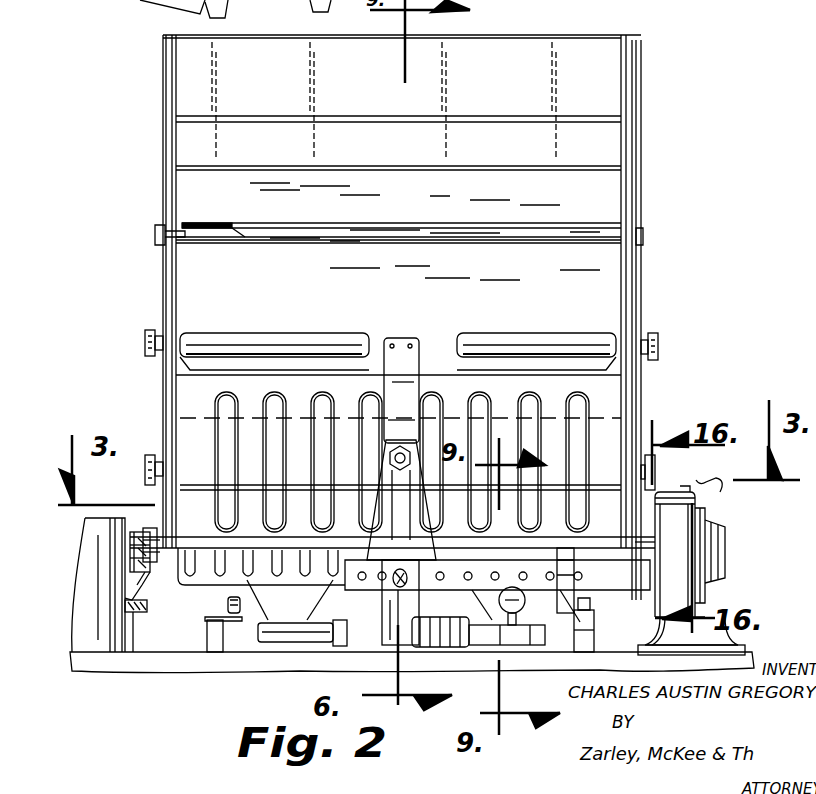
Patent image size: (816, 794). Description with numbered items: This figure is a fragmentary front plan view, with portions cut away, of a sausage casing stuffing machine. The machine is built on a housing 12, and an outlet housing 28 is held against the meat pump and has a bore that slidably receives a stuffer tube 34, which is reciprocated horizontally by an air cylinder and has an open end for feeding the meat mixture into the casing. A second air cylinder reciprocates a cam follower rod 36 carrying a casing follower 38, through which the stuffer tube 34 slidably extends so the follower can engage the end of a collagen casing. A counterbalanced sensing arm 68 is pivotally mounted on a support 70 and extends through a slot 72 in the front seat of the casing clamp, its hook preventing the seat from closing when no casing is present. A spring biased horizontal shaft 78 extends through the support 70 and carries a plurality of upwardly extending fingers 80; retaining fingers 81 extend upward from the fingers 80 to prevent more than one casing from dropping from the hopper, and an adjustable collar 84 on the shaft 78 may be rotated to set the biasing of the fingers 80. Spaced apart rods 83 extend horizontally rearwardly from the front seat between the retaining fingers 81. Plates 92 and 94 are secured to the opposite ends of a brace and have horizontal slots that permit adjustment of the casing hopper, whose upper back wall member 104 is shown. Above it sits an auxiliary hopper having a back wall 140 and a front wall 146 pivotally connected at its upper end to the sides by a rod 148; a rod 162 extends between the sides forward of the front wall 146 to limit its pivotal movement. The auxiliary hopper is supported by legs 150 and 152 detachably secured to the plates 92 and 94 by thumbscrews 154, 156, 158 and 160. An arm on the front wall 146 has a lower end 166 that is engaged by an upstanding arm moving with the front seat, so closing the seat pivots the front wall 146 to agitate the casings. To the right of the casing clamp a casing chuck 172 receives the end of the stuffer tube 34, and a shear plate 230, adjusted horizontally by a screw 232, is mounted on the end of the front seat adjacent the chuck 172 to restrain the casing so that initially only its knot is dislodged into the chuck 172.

The housing 12 is at (95, 0).
The outlet housing 28 is at (102, 626).
The stuffer tube 34 is at (168, 548).
The cam follower rod 36 is at (133, 652).
The casing follower 38 is at (148, 528).
The counterbalanced sensing arm 68 is at (393, 580).
The support 70 is at (398, 605).
The slot 72 is at (400, 572).
The spring biased horizontal shaft 78 is at (290, 644).
The fingers 80 is at (262, 615).
The retaining fingers 81 is at (240, 562).
The spaced apart rods 83 is at (523, 576).
The adjustable collar 84 is at (518, 615).
The plate 92 is at (641, 405).
The plate 94 is at (160, 383).
The upper back wall member 104 is at (412, 217).
The back wall 140 is at (580, 52).
The front wall 146 is at (410, 305).
The rod 148 is at (165, 264).
The leg 150 is at (637, 170).
The leg 152 is at (163, 176).
The thumbscrew 154 is at (660, 342).
The thumbscrew 156 is at (656, 478).
The thumbscrew 158 is at (145, 336).
The thumbscrew 160 is at (147, 458).
The rod 162 is at (545, 340).
The lower end 166 is at (414, 382).
The casing chuck 172 is at (686, 561).
The shear plate 230 is at (648, 585).
The screw 232 is at (724, 574).